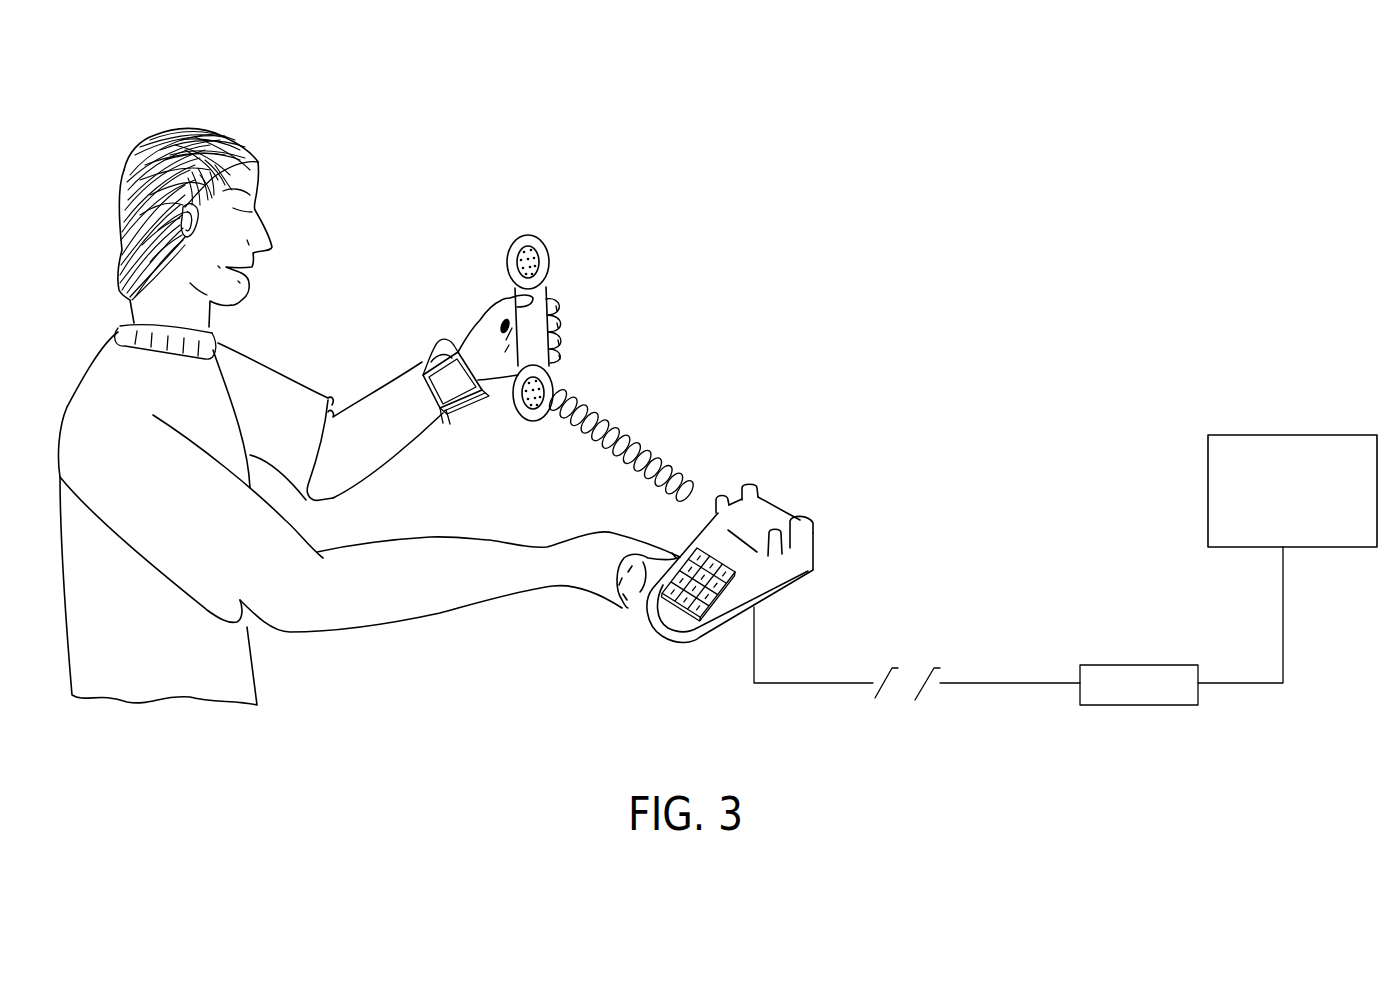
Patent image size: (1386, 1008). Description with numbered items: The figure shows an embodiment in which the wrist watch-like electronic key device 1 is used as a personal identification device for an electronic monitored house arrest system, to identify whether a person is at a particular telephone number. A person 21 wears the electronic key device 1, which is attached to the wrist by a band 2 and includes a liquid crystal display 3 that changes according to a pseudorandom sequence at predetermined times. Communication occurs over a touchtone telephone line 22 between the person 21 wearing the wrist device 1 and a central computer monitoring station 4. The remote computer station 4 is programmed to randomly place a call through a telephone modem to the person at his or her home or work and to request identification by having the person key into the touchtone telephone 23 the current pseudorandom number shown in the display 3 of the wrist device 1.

The electronic key device 1 is at (443, 423).
The band 2 is at (443, 348).
The liquid crystal display 3 is at (429, 375).
The remote computer station 4 is at (1208, 503).
The person 21 is at (260, 158).
The touchtone telephone line 22 is at (808, 683).
The touchtone telephone 23 is at (770, 516).